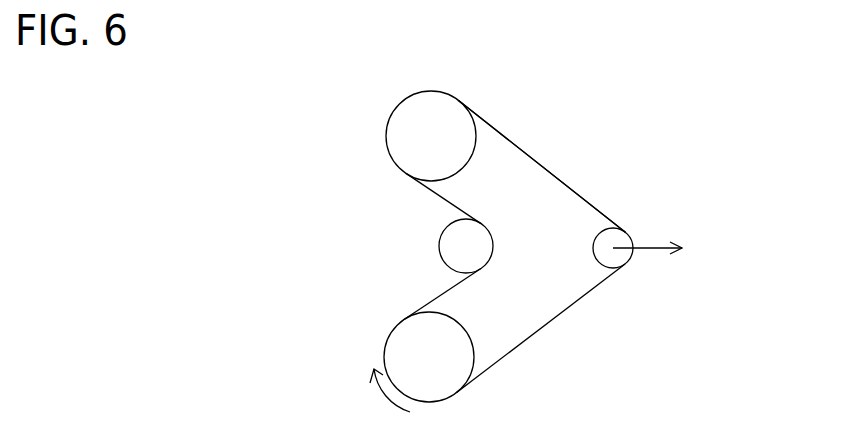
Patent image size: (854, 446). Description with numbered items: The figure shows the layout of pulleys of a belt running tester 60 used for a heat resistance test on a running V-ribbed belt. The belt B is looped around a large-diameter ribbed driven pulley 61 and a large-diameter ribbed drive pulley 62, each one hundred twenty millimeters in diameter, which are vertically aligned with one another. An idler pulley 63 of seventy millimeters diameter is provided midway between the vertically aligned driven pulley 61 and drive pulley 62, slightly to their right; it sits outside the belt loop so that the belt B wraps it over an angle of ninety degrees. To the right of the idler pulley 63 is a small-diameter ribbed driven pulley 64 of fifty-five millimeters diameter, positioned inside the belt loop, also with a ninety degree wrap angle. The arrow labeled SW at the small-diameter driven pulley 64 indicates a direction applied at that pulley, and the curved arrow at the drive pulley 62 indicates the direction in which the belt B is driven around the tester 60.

The belt running tester 60 is at (257, 108).
The large-diameter ribbed driven pulley 61 is at (395, 125).
The large-diameter ribbed drive pulley 62 is at (398, 342).
The idler pulley 63 is at (445, 248).
The small-diameter ribbed driven pulley 64 is at (620, 238).
The belt B is at (535, 158).
The belt width direction / steering direction SW is at (647, 262).